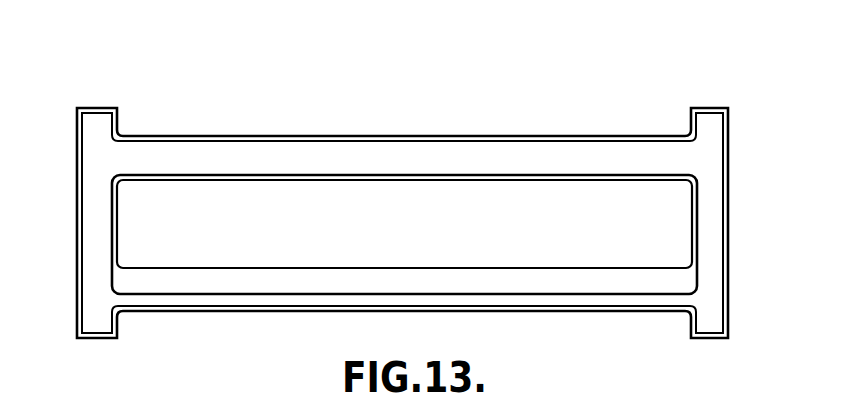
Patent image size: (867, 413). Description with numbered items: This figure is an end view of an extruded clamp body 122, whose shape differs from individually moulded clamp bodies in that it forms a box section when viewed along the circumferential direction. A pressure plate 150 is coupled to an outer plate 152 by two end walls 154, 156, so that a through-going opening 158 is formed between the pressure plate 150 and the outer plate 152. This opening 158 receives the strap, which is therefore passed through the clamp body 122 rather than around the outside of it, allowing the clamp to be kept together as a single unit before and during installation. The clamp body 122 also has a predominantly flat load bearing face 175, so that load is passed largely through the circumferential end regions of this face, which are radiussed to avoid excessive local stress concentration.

The clamp body 122 is at (411, 205).
The pressure plate 150 is at (475, 309).
The outer plate 152 is at (285, 160).
The end wall 154 is at (77, 228).
The end wall 156 is at (728, 220).
The through-going opening 158 is at (297, 237).
The load bearing face 175 is at (168, 227).